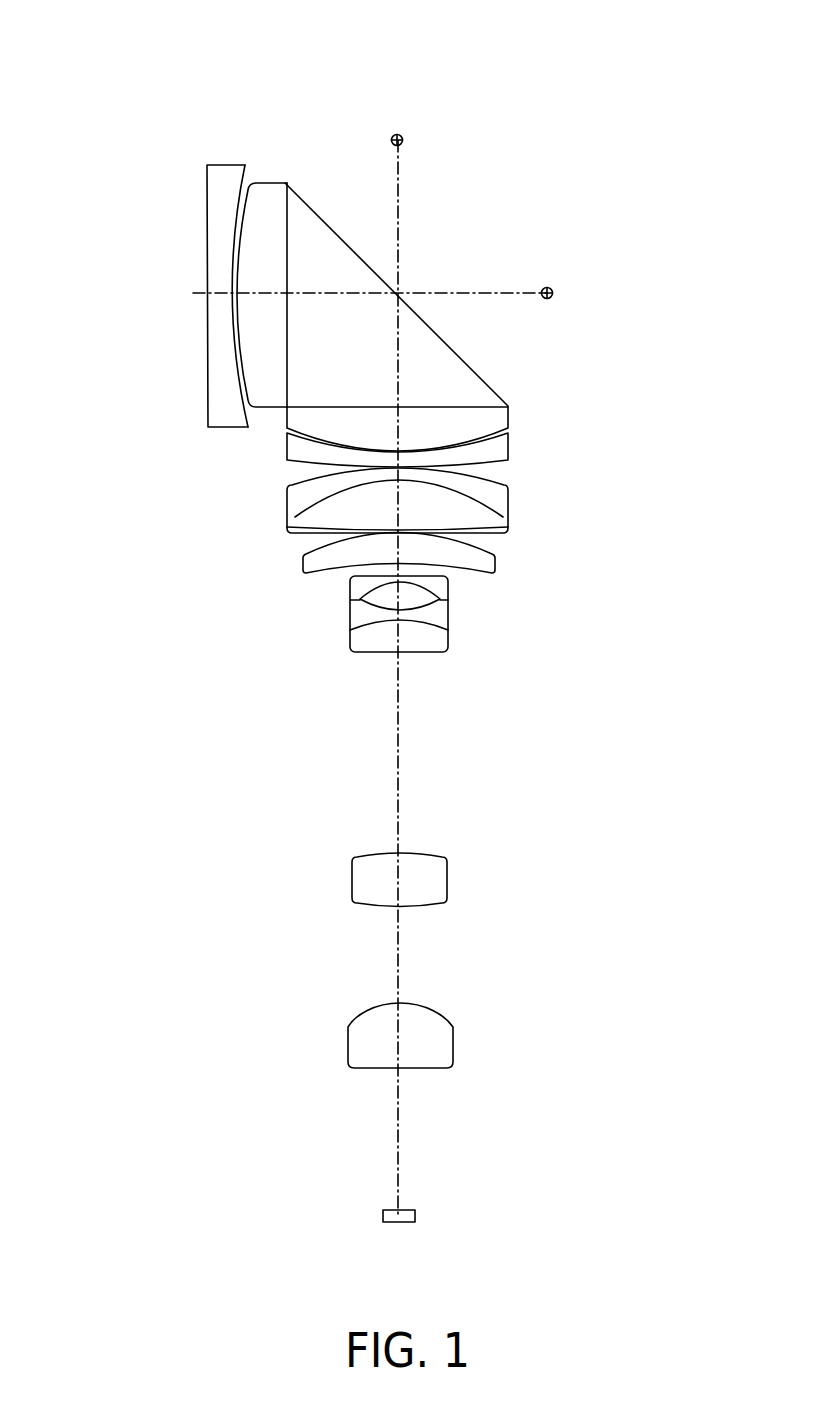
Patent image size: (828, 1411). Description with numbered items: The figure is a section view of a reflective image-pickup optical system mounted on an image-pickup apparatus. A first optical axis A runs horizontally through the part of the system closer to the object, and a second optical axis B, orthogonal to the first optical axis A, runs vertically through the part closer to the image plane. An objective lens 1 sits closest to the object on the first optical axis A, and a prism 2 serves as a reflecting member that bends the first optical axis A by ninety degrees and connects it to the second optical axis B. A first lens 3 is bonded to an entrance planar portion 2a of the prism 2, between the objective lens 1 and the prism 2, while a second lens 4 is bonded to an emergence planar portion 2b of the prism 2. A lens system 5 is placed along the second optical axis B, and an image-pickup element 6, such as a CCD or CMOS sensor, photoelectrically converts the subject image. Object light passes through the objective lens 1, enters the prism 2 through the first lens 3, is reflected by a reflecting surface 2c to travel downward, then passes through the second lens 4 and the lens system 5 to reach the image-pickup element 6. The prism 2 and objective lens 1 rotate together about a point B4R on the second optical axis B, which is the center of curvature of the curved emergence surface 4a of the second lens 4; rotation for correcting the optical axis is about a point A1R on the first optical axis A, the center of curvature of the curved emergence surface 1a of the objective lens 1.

The objective lens 1 is at (150, 292).
The curved surface (emergence surface) of the objective lens 1a is at (233, 348).
The prism 2 is at (471, 213).
The entrance planar portion 2a is at (290, 273).
The emergence planar portion 2b is at (430, 405).
The reflecting surface 2c is at (368, 266).
The first lens 3 is at (263, 212).
The second lens 4 is at (478, 423).
The curved surface (emergence surface) of the second lens 4a is at (327, 435).
The lens system 5 is at (519, 428).
The image-pickup element 6 is at (402, 1215).
The first optical axis A is at (460, 293).
The center of rotation point for optical axis correction A1R is at (551, 287).
The second optical axis B is at (398, 187).
The center of rotation point B4R is at (400, 134).